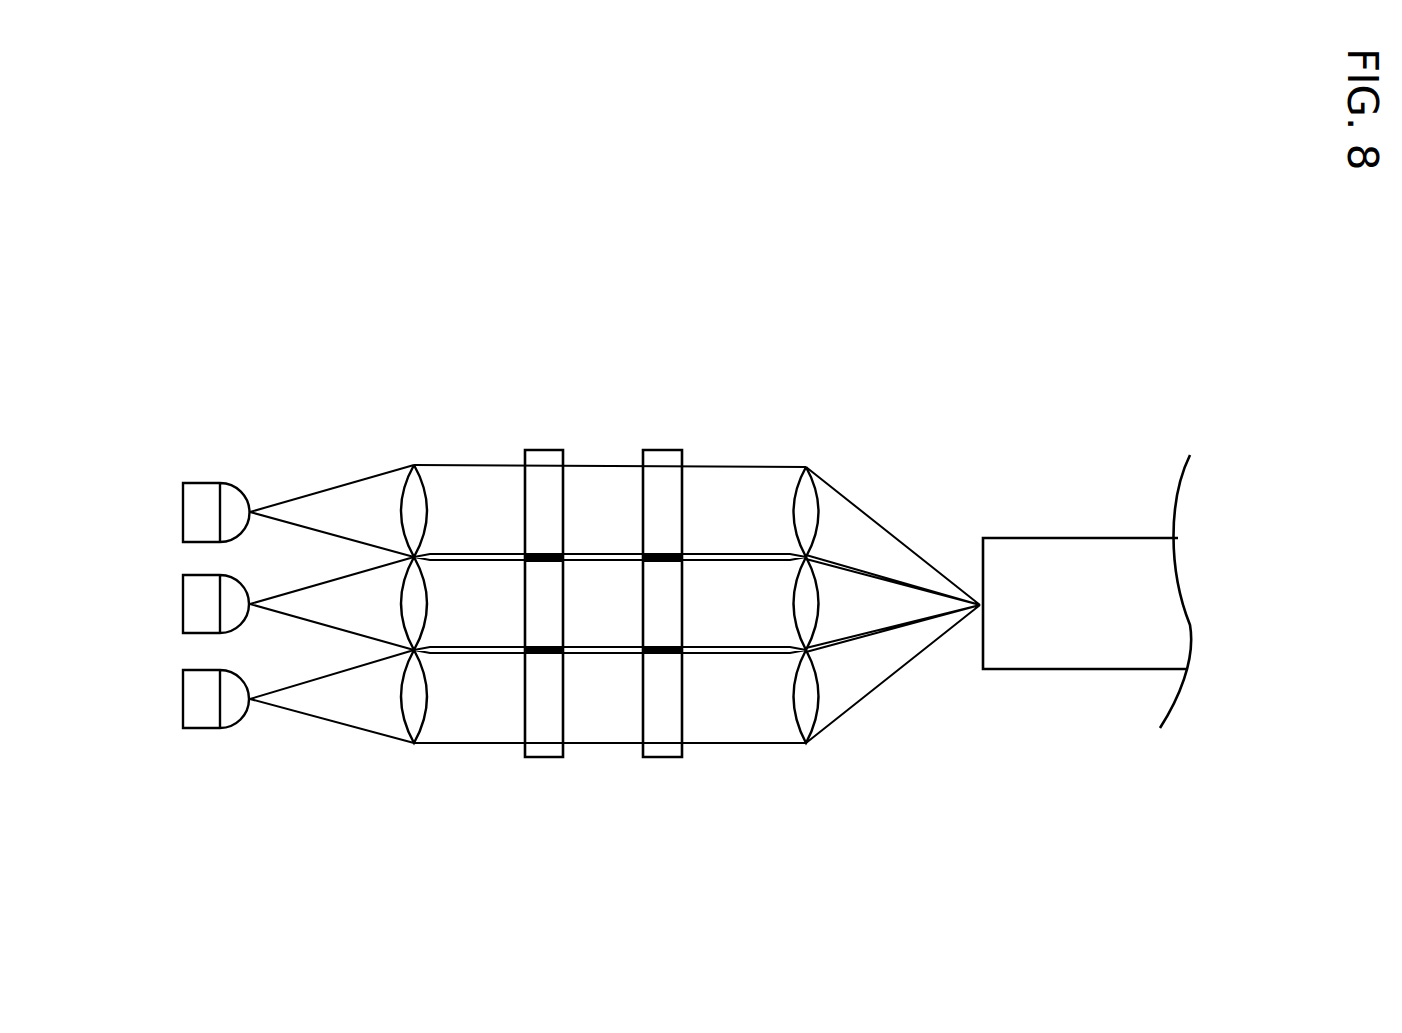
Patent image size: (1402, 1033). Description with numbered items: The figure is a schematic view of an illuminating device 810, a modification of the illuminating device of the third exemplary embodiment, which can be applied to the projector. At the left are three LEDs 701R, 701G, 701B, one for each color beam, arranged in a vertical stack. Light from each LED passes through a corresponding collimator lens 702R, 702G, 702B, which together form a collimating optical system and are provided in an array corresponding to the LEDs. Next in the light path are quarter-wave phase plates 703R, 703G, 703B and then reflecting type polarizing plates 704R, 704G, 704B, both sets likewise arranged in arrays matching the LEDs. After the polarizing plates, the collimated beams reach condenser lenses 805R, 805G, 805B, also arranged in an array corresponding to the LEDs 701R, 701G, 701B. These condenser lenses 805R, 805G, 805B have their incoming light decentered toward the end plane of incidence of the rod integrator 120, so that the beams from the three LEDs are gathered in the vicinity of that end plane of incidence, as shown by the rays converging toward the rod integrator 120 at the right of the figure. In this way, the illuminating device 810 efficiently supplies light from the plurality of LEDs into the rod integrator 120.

The illuminating device 810 is at (947, 363).
The LED for red color beam 701R is at (232, 513).
The LED for green color beam 701G is at (232, 605).
The LED for blue color beam 701B is at (232, 700).
The collimator lens 702R is at (406, 490).
The collimator lens 702G is at (418, 583).
The collimator lens 702B is at (412, 717).
The λ/4 phase plate 703R is at (532, 458).
The λ/4 phase plate 703G is at (533, 608).
The λ/4 phase plate 703B is at (542, 753).
The reflecting type polarizing plate 704R is at (650, 458).
The reflecting type polarizing plate 704G is at (670, 593).
The reflecting type polarizing plate 704B is at (652, 753).
The condenser lens 805R is at (806, 490).
The condenser lens 805G is at (800, 622).
The condenser lens 805B is at (810, 723).
The rod integrator 120 is at (1117, 547).